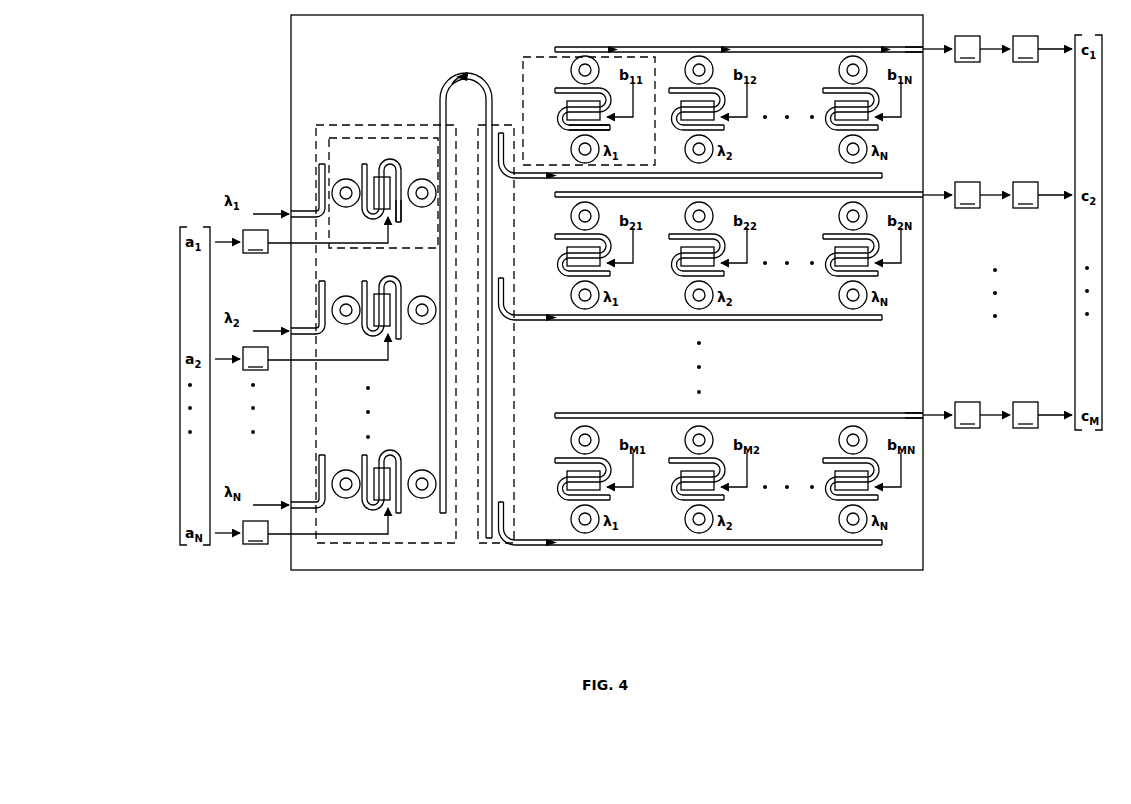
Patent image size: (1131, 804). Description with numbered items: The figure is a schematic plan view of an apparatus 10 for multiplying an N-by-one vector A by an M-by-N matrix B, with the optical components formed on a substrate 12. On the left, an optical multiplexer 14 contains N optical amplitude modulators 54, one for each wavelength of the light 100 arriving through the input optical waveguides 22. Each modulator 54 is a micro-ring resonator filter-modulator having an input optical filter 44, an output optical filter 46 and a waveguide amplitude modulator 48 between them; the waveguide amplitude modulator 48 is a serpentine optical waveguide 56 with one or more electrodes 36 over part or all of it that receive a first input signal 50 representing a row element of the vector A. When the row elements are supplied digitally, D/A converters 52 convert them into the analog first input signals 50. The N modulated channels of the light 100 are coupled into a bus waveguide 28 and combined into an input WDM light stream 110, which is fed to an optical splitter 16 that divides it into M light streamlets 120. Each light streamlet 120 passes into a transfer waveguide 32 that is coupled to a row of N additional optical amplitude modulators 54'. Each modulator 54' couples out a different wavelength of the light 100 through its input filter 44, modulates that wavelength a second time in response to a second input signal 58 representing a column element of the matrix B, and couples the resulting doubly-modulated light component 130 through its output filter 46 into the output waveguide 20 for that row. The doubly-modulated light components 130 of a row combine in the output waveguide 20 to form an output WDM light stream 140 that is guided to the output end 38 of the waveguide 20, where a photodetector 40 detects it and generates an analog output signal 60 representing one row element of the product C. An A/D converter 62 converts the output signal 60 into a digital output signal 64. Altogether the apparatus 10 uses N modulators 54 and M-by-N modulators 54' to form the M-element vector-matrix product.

The apparatus 10 is at (337, 588).
The substrate 12 is at (332, 50).
The optical multiplexer 14 is at (373, 545).
The optical splitter 16 is at (498, 545).
The output waveguide 20 is at (652, 44).
The input optical waveguide 22 is at (307, 209).
The bus waveguide 28 is at (439, 386).
The transfer waveguide 32 is at (556, 313).
The electrode 36 is at (392, 186).
The output end 38 is at (917, 44).
The photodetector 40 is at (967, 232).
The input optical filter 44 is at (347, 178).
The output optical filter 46 is at (424, 178).
The waveguide amplitude modulator 48 is at (400, 224).
The first input signal 50 is at (288, 246).
The D/A converter 52 is at (255, 387).
The optical amplitude modulator 54 is at (383, 204).
The additional optical amplitude modulator 54' is at (589, 92).
The serpentine optical waveguide 56 is at (384, 176).
The second input signal 58 is at (636, 119).
The output signal 60 is at (1000, 55).
The A/D converter 62 is at (1025, 232).
The digital output signal 64 is at (1056, 55).
The light 100 is at (272, 210).
The input WDM light stream 110 is at (456, 80).
The light streamlet 120 is at (538, 179).
The doubly-modulated light component 130 is at (608, 44).
The output WDM light stream 140 is at (944, 55).